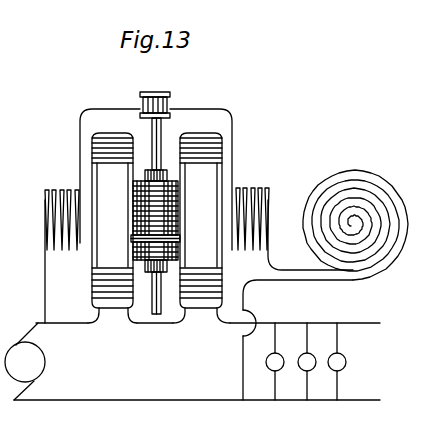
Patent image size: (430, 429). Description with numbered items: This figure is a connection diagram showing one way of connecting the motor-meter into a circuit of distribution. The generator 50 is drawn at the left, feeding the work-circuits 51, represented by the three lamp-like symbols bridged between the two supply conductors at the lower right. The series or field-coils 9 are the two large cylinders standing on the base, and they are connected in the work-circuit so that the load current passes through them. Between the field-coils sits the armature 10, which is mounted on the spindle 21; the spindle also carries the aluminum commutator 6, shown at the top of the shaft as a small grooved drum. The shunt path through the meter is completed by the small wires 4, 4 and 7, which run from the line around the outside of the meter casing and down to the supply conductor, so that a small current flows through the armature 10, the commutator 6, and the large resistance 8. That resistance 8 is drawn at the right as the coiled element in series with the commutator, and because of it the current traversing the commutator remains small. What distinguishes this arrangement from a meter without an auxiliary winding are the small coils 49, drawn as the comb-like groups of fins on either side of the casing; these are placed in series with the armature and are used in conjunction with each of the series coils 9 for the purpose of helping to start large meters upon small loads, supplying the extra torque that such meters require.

The small wires 4 is at (80, 116).
The commutator 6 is at (160, 106).
The small wire 7 is at (298, 340).
The resistance 8 is at (355, 213).
The series or field-coils 9 is at (159, 228).
The armature 10 is at (168, 227).
The spindle 21 is at (126, 326).
The small coils 49 is at (157, 209).
The generator 50 is at (192, 361).
The work-circuits 51 is at (317, 361).